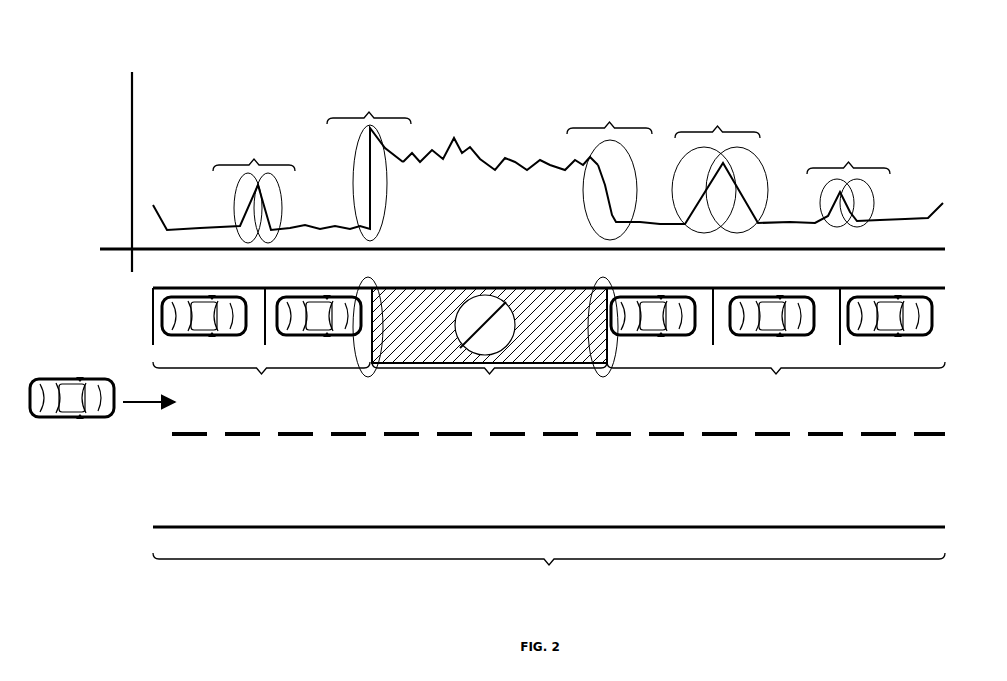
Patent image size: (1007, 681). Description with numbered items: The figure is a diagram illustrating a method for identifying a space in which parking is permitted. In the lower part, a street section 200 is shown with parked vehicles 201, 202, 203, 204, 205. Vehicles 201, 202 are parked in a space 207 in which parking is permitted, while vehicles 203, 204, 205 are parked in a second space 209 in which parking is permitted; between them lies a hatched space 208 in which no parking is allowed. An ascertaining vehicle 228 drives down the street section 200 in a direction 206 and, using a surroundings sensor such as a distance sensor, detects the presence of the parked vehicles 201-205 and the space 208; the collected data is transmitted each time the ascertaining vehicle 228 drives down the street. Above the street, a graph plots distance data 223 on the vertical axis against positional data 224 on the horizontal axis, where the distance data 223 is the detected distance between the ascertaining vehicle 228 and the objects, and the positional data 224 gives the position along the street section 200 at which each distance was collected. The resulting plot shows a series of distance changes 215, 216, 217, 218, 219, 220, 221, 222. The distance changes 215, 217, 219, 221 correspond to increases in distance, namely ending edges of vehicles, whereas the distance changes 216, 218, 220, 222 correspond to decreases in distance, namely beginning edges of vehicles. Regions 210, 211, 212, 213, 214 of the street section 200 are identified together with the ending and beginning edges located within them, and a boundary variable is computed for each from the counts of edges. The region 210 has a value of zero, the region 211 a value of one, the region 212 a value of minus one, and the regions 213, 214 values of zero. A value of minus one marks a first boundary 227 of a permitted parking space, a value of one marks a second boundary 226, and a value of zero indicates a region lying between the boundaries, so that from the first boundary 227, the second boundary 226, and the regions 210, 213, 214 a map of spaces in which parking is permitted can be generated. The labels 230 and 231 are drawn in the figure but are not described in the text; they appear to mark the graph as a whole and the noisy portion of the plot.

The street section 200 is at (549, 440).
The vehicle 201 is at (204, 325).
The vehicle 202 is at (319, 325).
The vehicle 203 is at (653, 325).
The vehicle 204 is at (772, 325).
The vehicle 205 is at (890, 325).
The direction 206 is at (149, 411).
The space in which parking is permitted 207 is at (261, 381).
The space in which no parking is allowed 208 is at (484, 344).
The space in which parking is permitted 209 is at (776, 381).
The region 210 is at (254, 156).
The region 211 is at (369, 109).
The region 212 is at (609, 119).
The region 213 is at (717, 123).
The region 214 is at (848, 159).
The distance change 215 is at (237, 208).
The distance change 216 is at (276, 200).
The distance change 217 is at (355, 160).
The distance change 218 is at (585, 158).
The distance change 219 is at (680, 157).
The distance change 220 is at (767, 173).
The distance change 221 is at (817, 205).
The distance change 222 is at (882, 203).
The distance data 223 is at (145, 172).
The positional data 224 is at (522, 259).
The second boundary 226 is at (383, 280).
The first boundary 227 is at (592, 280).
The ascertaining vehicle 228 is at (72, 390).
The sensor signal 230 is at (185, 58).
The noisy signal segment 231 is at (465, 140).